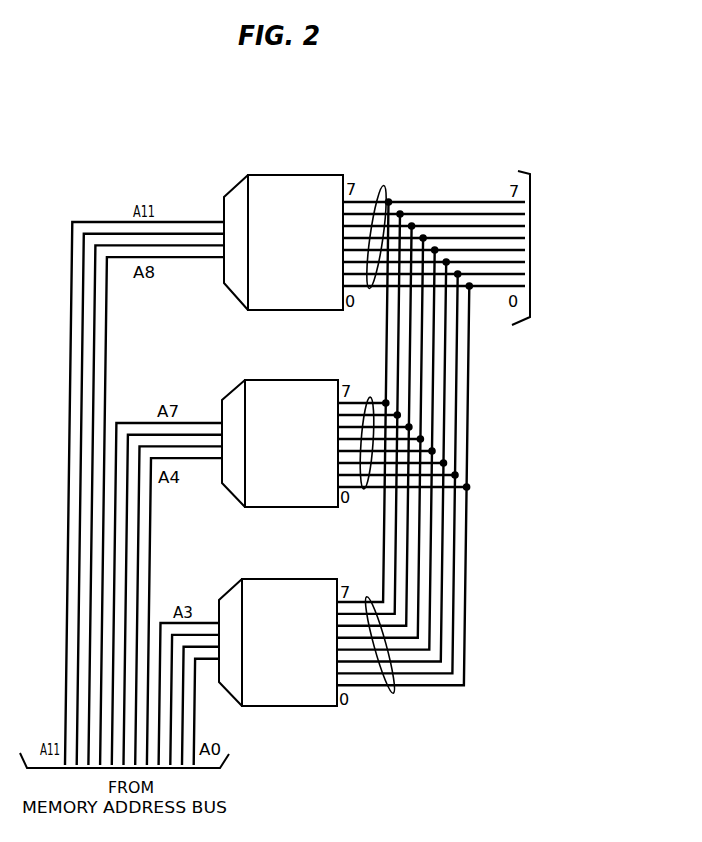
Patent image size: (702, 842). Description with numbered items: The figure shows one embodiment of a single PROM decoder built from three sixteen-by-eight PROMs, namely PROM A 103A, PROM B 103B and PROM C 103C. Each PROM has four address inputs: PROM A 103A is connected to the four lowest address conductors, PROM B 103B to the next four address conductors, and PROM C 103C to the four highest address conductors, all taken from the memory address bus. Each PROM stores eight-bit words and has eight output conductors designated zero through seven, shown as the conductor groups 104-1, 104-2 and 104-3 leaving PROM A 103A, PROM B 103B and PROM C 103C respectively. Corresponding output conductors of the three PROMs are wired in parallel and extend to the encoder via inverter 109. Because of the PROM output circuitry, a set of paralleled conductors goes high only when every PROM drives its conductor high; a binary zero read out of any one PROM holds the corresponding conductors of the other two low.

The PROM A 103A is at (278, 588).
The PROM B 103B is at (277, 390).
The PROM C 103C is at (288, 186).
The output cable from PROM A 104-1 is at (392, 694).
The output cable from PROM B 104-2 is at (371, 397).
The output cable from PROM C 104-3 is at (385, 190).
The inverter 109 is at (566, 248).